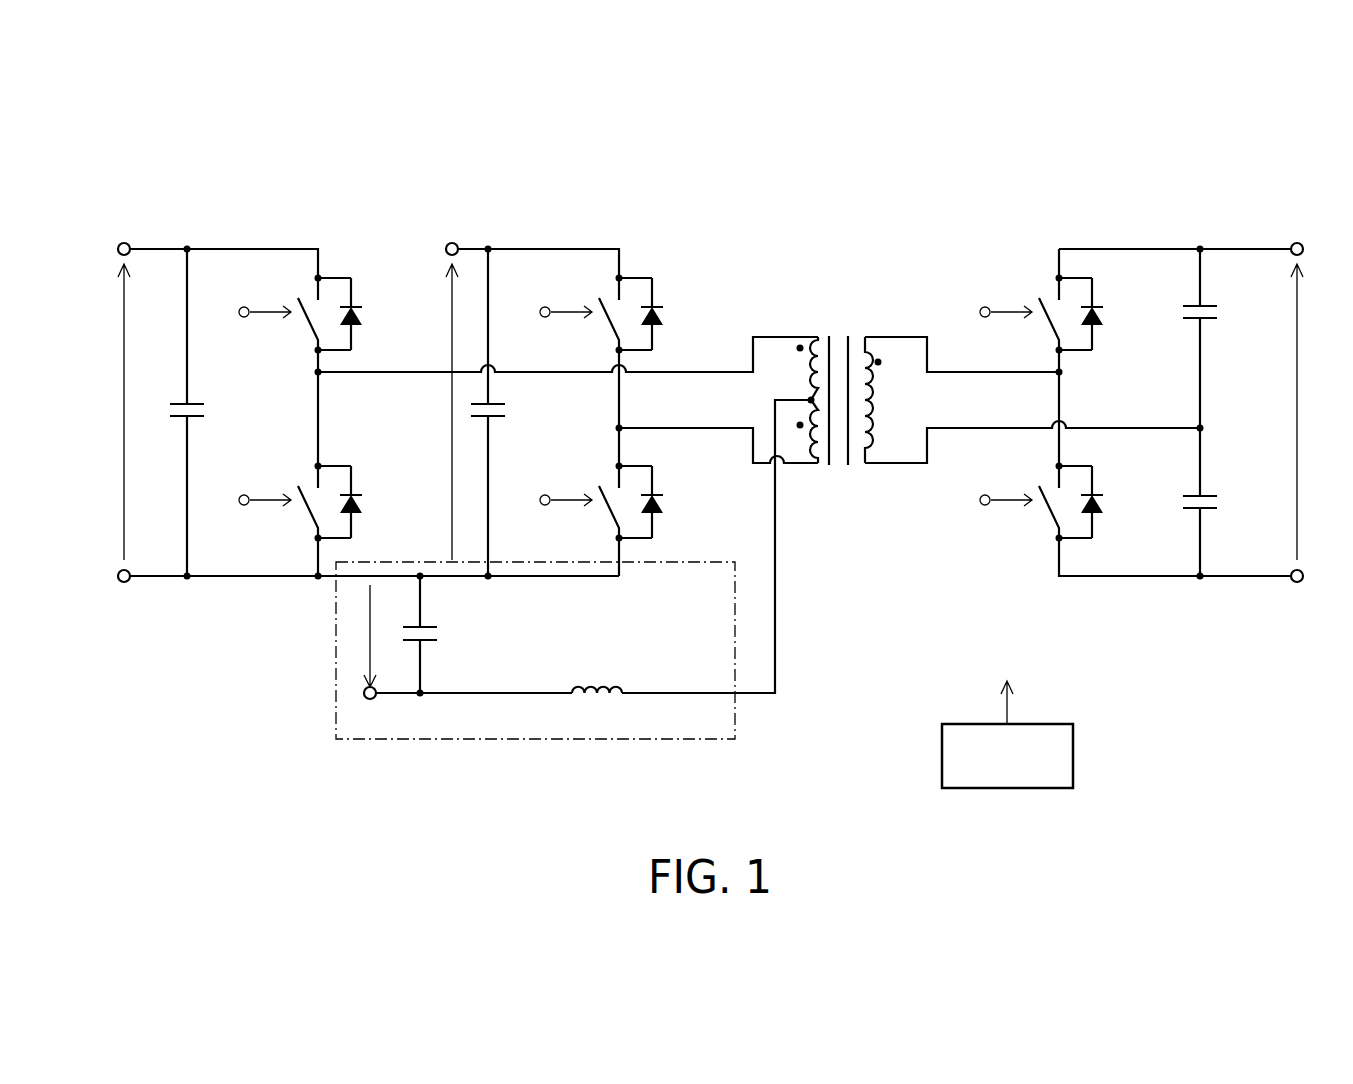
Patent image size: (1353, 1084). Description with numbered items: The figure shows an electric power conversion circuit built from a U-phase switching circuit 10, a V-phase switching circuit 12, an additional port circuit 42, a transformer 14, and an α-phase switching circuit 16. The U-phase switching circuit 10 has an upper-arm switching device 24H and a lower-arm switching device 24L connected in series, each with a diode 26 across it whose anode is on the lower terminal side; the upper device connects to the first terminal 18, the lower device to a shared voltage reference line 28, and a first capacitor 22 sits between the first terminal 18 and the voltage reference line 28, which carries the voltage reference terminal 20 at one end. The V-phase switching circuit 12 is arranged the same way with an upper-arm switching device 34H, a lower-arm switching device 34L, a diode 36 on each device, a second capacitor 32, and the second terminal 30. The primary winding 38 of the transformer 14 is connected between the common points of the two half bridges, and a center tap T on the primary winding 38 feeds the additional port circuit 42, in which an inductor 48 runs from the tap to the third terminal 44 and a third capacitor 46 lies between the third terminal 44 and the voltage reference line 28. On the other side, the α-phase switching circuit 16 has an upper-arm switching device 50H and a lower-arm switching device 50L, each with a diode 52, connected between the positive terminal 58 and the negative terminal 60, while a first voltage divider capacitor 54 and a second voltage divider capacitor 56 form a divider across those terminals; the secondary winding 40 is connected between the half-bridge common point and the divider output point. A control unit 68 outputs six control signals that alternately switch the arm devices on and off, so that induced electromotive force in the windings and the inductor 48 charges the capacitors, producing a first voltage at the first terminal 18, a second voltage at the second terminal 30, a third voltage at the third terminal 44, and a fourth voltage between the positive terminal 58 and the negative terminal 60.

The U-phase switching circuit 10 is at (383, 158).
The V-phase switching circuit 12 is at (412, 158).
The transformer 14 is at (852, 290).
The α-phase switching circuit 16 is at (1020, 158).
The first terminal 18 is at (124, 243).
The voltage reference terminal 20 is at (122, 582).
The first capacitor 22 is at (200, 422).
The upper-arm switching device 24H is at (290, 330).
The lower-arm switching device 24L is at (292, 523).
The diode 26 is at (362, 317).
The voltage reference line 28 is at (278, 582).
The second terminal 30 is at (452, 243).
The second capacitor 32 is at (500, 422).
The upper-arm switching device 34H is at (592, 330).
The lower-arm switching device 34L is at (600, 520).
The diode 36 is at (663, 317).
The primary winding 38 is at (817, 335).
The secondary winding 40 is at (859, 455).
The additional port circuit 42 is at (628, 742).
The third terminal 44 is at (370, 700).
The third capacitor 46 is at (440, 633).
The inductor 48 is at (593, 680).
The upper-arm switching device 50H is at (1020, 285).
The lower-arm switching device 50L is at (1037, 517).
The diode 52 is at (1105, 313).
The first voltage divider capacitor 54 is at (1210, 322).
The second voltage divider capacitor 56 is at (1212, 512).
The positive terminal 58 is at (1300, 242).
The negative terminal 60 is at (1297, 583).
The control unit 68 is at (958, 723).
The center tap of primary winding T is at (809, 399).